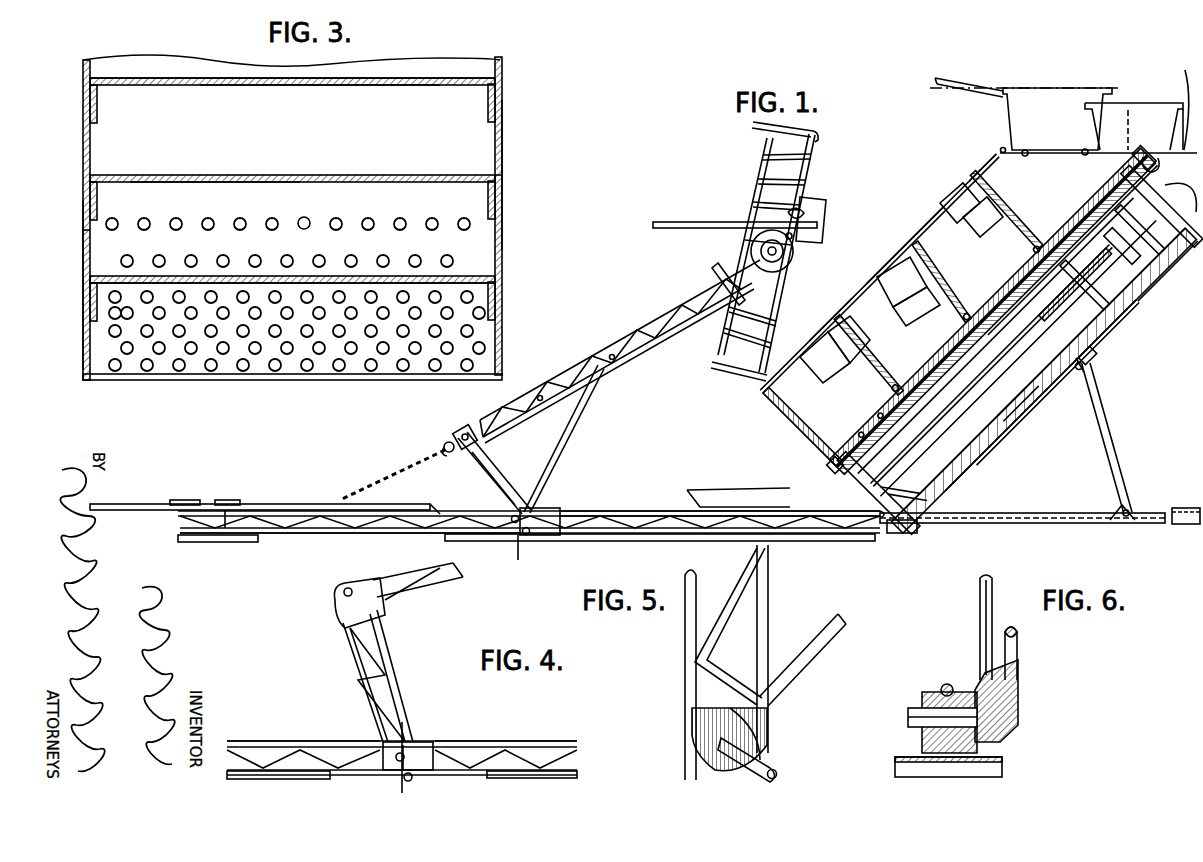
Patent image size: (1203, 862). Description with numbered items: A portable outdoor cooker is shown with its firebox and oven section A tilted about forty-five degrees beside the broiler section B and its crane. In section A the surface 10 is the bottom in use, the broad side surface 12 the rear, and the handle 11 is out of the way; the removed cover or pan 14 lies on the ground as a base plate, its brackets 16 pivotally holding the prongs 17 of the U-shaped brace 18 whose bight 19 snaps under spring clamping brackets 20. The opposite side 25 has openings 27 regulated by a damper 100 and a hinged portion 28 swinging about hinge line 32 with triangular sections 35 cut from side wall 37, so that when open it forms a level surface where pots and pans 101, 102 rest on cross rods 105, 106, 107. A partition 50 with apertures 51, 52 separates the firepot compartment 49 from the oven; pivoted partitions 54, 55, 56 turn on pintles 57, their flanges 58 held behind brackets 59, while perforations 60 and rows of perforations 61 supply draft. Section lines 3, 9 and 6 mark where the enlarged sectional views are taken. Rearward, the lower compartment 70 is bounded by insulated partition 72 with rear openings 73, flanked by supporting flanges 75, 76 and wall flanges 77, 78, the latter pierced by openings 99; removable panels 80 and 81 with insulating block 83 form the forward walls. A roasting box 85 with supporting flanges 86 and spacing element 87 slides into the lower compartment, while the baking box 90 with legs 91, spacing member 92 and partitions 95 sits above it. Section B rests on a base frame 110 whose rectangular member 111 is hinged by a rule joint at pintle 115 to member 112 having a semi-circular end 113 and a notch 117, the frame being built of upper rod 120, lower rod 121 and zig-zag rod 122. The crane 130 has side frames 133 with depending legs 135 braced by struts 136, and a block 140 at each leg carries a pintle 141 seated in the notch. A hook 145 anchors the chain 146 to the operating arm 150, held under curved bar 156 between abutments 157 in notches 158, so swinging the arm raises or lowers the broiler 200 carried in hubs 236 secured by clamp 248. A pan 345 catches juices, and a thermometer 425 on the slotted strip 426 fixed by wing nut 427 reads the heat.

In FIG. 3, the section line 3 is at (500, 190).
In FIG. 1, the section line 3 is at (758, 390).
In FIG. 1, the section line 9 is at (1000, 160).
In FIG. 3, the surface 10 is at (255, 378).
In FIG. 1, the surface 10 is at (762, 394).
In FIG. 1, the handle 11 is at (812, 462).
In FIG. 1, the broad side surface 12 is at (1030, 408).
In FIG. 1, the cover member 14 is at (1032, 515).
In FIG. 1, the brackets 16 is at (1150, 512).
In FIG. 1, the prongs 17 is at (1130, 508).
In FIG. 1, the U-shaped brace 18 is at (1110, 440).
In FIG. 1, the bight 19 is at (1084, 372).
In FIG. 1, the spring clamping brackets 20 is at (1085, 360).
In FIG. 1, the side 25 is at (1186, 129).
In FIG. 1, the openings 27 is at (1158, 262).
In FIG. 1, the hinged portion 28 is at (1139, 130).
In FIG. 1, the hinge line 32 is at (1086, 149).
In FIG. 1, the triangular section 35 is at (1173, 98).
In FIG. 3, the side wall 37 is at (85, 243).
In FIG. 1, the firepot compartment 49 is at (880, 298).
In FIG. 3, the partition 50 is at (478, 148).
In FIG. 1, the partition 50 is at (955, 340).
In FIG. 3, the apertures 51 is at (360, 365).
In FIG. 1, the apertures 51 is at (880, 415).
In FIG. 3, the apertures 52 is at (275, 222).
In FIG. 1, the apertures 52 is at (948, 360).
In FIG. 3, the pivoted flanged partition 54 is at (192, 276).
In FIG. 1, the pivoted flanged partition 54 is at (842, 318).
In FIG. 3, the pivoted flanged partition 55 is at (230, 182).
In FIG. 1, the pivoted flanged partition 55 is at (895, 252).
In FIG. 3, the pivoted flanged partition 56 is at (235, 84).
In FIG. 1, the pivoted flanged partition 56 is at (972, 172).
In FIG. 1, the pintles 57 is at (1035, 255).
In FIG. 3, the flanges 58 is at (88, 95).
In FIG. 1, the flanges 58 is at (875, 310).
In FIG. 3, the brackets 59 is at (98, 112).
In FIG. 1, the brackets 59 is at (835, 340).
In FIG. 3, the perforations 60 is at (360, 85).
In FIG. 1, the perforations 60 is at (886, 363).
In FIG. 1, the perforations 61 is at (810, 440).
In FIG. 1, the lower compartment 70 is at (975, 470).
In FIG. 1, the partition 72 is at (1003, 417).
In FIG. 1, the openings 73 is at (1010, 408).
In FIG. 1, the supporting flange 75 is at (937, 392).
In FIG. 1, the supporting flange 76 is at (1101, 261).
In FIG. 1, the flange 77 is at (900, 455).
In FIG. 1, the flange 78 is at (1128, 222).
In FIG. 1, the removable flanged panel 80 is at (991, 366).
In FIG. 1, the removable flanged panel 81 is at (1098, 300).
In FIG. 1, the insulating material 83 is at (996, 315).
In FIG. 1, the roasting box 85 is at (975, 462).
In FIG. 1, the end supporting flanges 86 is at (1030, 425).
In FIG. 1, the spacing element 87 is at (905, 455).
In FIG. 1, the baking box 90 is at (1097, 337).
In FIG. 1, the flange-like legs 91 is at (1163, 285).
In FIG. 1, the spacing member 92 is at (1045, 325).
In FIG. 1, the partitions 95 is at (1073, 250).
In FIG. 1, the openings 99 is at (880, 437).
In FIG. 1, the damper 100 is at (1167, 179).
In FIG. 1, the pot 101 is at (1058, 87).
In FIG. 1, the pan 102 is at (1148, 103).
In FIG. 1, the cross rod 105 is at (1026, 150).
In FIG. 1, the cross rod 106 is at (1088, 157).
In FIG. 1, the cross rod 107 is at (1163, 169).
In FIG. 1, the base frame 110 is at (560, 505).
In FIG. 4, the base frame 110 is at (295, 738).
In FIG. 1, the rectangular member 111 is at (620, 510).
In FIG. 4, the rectangular member 111 is at (573, 738).
In FIG. 1, the flat member 112 is at (445, 512).
In FIG. 4, the flat member 112 is at (265, 739).
In FIG. 1, the semi-circular end portion 113 is at (182, 543).
In FIG. 1, the pintle 115 is at (528, 535).
In FIG. 4, the pintle 115 is at (413, 778).
In FIG. 1, the notch 117 is at (513, 522).
In FIG. 4, the notch 117 is at (395, 755).
In FIG. 1, the upper rod 120 is at (650, 512).
In FIG. 4, the upper rod 120 is at (500, 739).
In FIG. 6, the upper rod 120 is at (946, 684).
In FIG. 1, the lower rod 121 is at (610, 540).
In FIG. 4, the lower rod 121 is at (578, 775).
In FIG. 6, the lower rod 121 is at (1003, 760).
In FIG. 1, the zig-zag intermediate rod 122 is at (812, 520).
In FIG. 1, the crane arm 130 is at (552, 370).
In FIG. 1, the side frame 133 is at (648, 350).
In FIG. 4, the side frame 133 is at (425, 585).
In FIG. 1, the leg member 135 is at (498, 480).
In FIG. 4, the leg member 135 is at (373, 660).
In FIG. 5, the leg member 135 is at (740, 612).
In FIG. 6, the leg member 135 is at (982, 612).
In FIG. 1, the struts 136 is at (572, 415).
In FIG. 5, the struts 136 is at (812, 645).
In FIG. 6, the struts 136 is at (1017, 648).
In FIG. 4, the block 140 is at (408, 756).
In FIG. 5, the block 140 is at (755, 718).
In FIG. 6, the block 140 is at (1005, 735).
In FIG. 1, the stub shaft 141 is at (532, 559).
In FIG. 4, the stub shaft 141 is at (405, 755).
In FIG. 5, the stub shaft 141 is at (770, 752).
In FIG. 6, the stub shaft 141 is at (912, 715).
In FIG. 1, the hook 145 is at (450, 440).
In FIG. 1, the chain 146 is at (405, 470).
In FIG. 1, the operating arm 150 is at (145, 502).
In FIG. 1, the curved bar 156 is at (188, 498).
In FIG. 1, the abutments 157 is at (228, 500).
In FIG. 1, the notches 158 is at (227, 512).
In FIG. 1, the broiler 200 is at (822, 148).
In FIG. 1, the hub elements 236 is at (751, 246).
In FIG. 1, the clamp 248 is at (795, 258).
In FIG. 1, the pan 345 is at (698, 490).
In FIG. 1, the thermometer 425 is at (826, 222).
In FIG. 1, the adjustable slotted strip 426 is at (703, 220).
In FIG. 1, the wing nut 427 is at (795, 215).
In FIG. 4, the section line 6 is at (410, 720).
In FIG. 3, the firebox and oven section A is at (503, 232).
In FIG. 1, the firebox and oven section A is at (905, 250).
In FIG. 1, the broiler section B is at (633, 325).